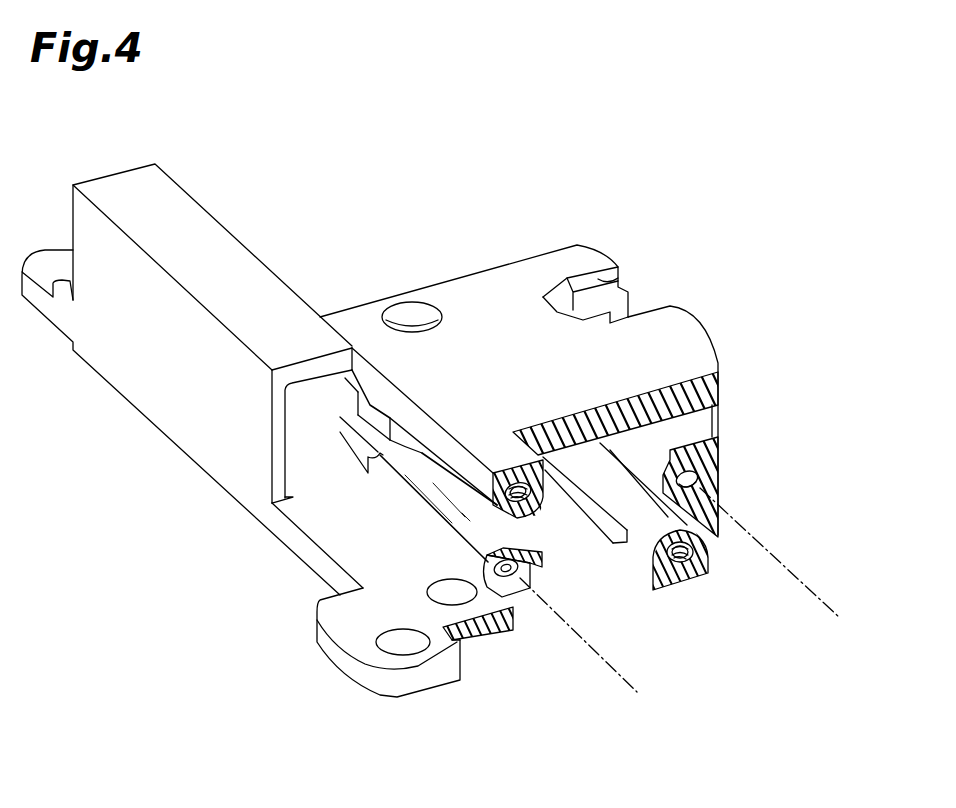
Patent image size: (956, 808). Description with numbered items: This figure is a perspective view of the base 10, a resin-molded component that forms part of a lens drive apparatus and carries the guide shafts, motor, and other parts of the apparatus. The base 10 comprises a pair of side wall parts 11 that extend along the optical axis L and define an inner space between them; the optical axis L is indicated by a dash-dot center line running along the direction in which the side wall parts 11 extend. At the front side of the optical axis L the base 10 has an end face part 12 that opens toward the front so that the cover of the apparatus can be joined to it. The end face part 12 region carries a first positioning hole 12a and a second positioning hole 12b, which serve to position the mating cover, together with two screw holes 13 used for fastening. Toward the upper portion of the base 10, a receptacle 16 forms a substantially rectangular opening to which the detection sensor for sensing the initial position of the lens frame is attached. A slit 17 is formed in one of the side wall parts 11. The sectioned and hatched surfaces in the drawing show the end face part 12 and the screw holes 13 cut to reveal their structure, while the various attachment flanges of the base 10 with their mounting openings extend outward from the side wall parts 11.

The base 10 is at (506, 258).
The side wall part 11 is at (493, 352).
The end face part 12 is at (723, 397).
The first positioning hole 12a is at (533, 580).
The second positioning hole 12b is at (703, 478).
The screw hole 13 is at (538, 515).
The receptacle 16 is at (617, 267).
The slit 17 is at (597, 542).
The optical axis L is at (568, 662).